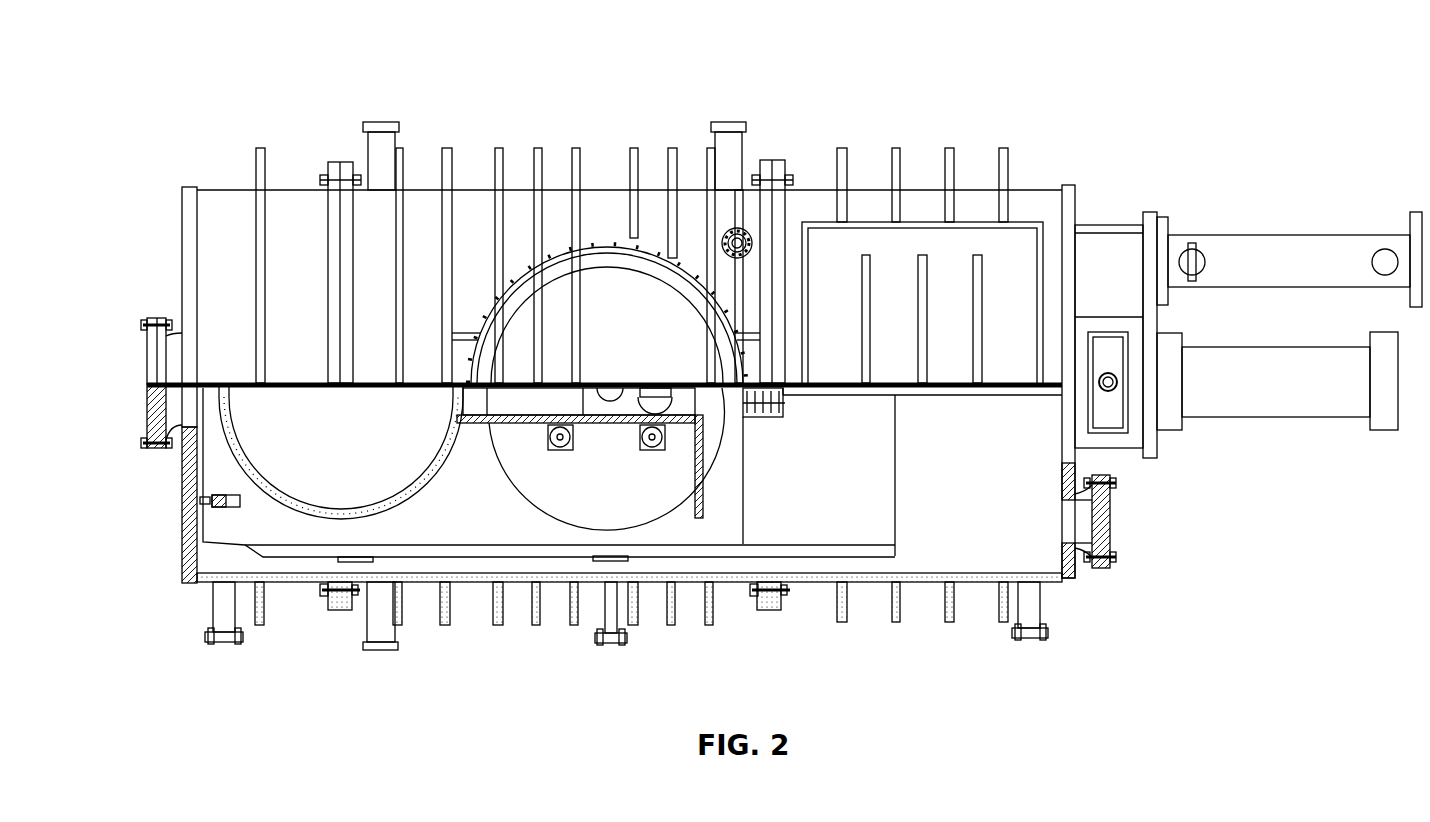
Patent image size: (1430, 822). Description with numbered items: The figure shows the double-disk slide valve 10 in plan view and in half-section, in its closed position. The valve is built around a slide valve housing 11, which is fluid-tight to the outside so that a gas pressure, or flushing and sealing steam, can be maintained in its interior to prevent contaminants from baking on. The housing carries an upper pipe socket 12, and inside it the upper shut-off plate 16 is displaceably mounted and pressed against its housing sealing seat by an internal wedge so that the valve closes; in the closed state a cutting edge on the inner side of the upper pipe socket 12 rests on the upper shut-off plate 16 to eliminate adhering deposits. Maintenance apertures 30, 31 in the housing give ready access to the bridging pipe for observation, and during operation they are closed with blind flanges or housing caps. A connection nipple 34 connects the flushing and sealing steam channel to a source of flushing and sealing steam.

The double-disk slide valve 10 is at (238, 74).
The slide valve housing 11 is at (1063, 185).
The upper pipe socket 12 is at (586, 260).
The upper shut-off plate 16 is at (508, 338).
The maintenance aperture 30 is at (140, 386).
The maintenance aperture 31 is at (1118, 522).
The connection nipple 34 is at (612, 648).